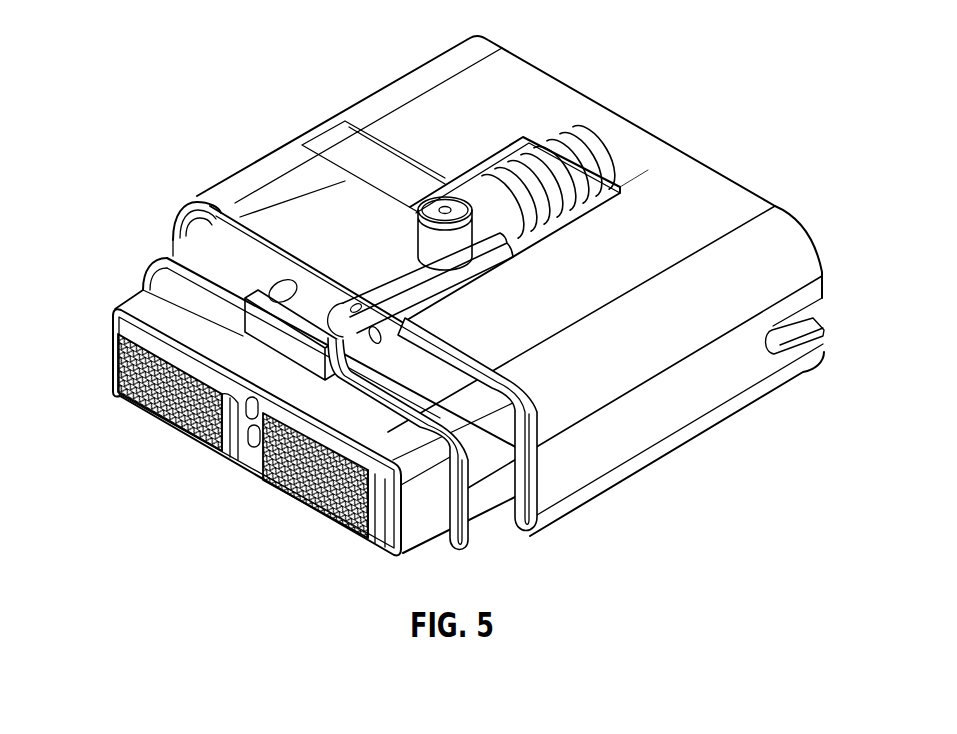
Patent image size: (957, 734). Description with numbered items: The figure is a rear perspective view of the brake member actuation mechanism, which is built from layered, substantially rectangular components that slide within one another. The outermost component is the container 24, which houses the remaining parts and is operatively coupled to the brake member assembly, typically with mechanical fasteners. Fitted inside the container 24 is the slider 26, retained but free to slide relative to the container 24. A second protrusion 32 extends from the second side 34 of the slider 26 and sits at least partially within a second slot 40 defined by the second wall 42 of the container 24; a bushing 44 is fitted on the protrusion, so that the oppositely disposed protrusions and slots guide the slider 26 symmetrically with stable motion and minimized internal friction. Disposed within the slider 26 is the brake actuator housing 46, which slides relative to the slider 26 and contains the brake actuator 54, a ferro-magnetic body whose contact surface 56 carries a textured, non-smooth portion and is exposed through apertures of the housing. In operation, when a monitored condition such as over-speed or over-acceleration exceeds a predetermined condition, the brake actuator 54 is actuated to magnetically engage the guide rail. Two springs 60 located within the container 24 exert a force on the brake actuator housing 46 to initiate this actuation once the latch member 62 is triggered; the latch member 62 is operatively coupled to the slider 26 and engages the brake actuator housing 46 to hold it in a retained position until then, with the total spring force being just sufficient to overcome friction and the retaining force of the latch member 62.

The container 24 is at (378, 96).
The slider 26 is at (165, 248).
The second protrusion 32 is at (446, 206).
The second side 34 is at (217, 247).
The second slot 40 is at (605, 201).
The second wall 42 is at (647, 148).
The bushing 44 is at (417, 207).
The brake actuator housing 46 is at (130, 298).
The brake actuator 54 is at (200, 453).
The contact surface 56 is at (162, 422).
The spring 60 is at (547, 158).
The latch member 62 is at (130, 405).